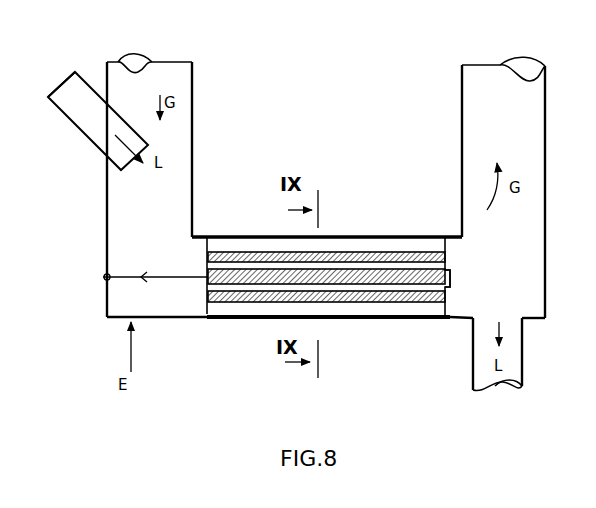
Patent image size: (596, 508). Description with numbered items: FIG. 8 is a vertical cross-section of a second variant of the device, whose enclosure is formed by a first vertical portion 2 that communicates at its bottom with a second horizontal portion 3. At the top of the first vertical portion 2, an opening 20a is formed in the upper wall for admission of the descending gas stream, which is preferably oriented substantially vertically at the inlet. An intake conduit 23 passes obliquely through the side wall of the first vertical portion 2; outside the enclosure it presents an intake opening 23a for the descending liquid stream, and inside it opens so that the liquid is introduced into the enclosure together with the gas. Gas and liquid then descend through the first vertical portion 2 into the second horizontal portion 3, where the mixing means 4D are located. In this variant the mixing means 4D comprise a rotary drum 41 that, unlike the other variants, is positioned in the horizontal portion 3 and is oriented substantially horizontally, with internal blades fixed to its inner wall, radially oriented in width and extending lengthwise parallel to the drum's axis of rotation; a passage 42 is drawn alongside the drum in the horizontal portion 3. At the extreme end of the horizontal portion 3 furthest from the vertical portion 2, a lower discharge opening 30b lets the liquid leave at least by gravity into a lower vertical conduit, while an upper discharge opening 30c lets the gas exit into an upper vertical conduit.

The first vertical portion 2 is at (206, 157).
The second horizontal portion 3 is at (235, 322).
The mixing means 4D is at (451, 297).
The opening 20a is at (131, 70).
The intake conduit 23 is at (71, 121).
The intake opening 23a is at (58, 83).
The lower discharge opening 30b is at (505, 317).
The upper discharge opening 30c is at (513, 215).
The rotary drum 41 is at (450, 237).
The liquid passage 42 is at (183, 279).